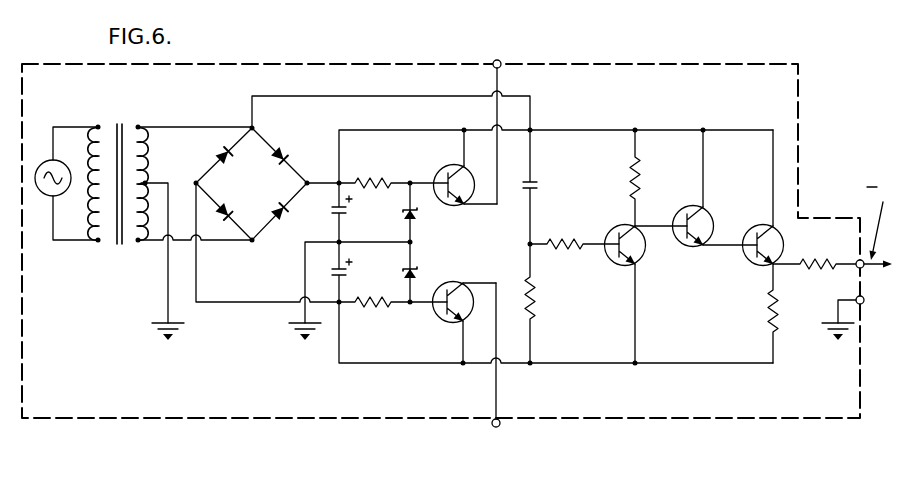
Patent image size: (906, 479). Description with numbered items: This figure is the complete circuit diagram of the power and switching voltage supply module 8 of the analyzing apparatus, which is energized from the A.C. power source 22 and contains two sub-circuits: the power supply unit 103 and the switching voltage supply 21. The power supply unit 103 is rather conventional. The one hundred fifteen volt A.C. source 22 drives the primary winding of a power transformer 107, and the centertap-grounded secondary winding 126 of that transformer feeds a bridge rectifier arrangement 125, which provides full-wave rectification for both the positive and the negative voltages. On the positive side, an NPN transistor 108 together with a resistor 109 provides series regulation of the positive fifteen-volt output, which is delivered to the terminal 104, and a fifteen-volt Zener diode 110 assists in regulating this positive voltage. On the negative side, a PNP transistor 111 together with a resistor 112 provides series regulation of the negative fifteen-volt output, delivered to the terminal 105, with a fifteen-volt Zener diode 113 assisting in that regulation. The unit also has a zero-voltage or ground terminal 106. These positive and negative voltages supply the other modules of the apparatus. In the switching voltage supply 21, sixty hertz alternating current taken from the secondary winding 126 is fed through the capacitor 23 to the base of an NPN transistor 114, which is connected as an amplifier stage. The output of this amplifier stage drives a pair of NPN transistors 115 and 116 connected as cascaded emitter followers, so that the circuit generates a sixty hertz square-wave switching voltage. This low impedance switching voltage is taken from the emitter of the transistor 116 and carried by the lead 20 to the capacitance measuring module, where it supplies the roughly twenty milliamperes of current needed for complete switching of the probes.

The power and switching voltage supply module 8 is at (367, 62).
The A.C. power source 22 is at (50, 199).
The power transformer 107 is at (118, 121).
The secondary winding 126 is at (147, 148).
The bridge rectifier arrangement 125 is at (266, 192).
The resistor 109 is at (369, 178).
The NPN transistor 108 is at (452, 165).
The terminal 104 is at (501, 67).
The Zener diode 110 is at (404, 214).
The power supply unit 103 is at (487, 242).
The capacitor 23 is at (539, 185).
The Zener diode 113 is at (404, 274).
The resistor 112 is at (368, 308).
The PNP transistor 111 is at (450, 324).
The terminal 105 is at (494, 418).
The NPN transistor 114 is at (608, 263).
The NPN transistor 115 is at (695, 205).
The NPN transistor 116 is at (758, 224).
The switching voltage supply 21 is at (692, 280).
The ground terminal 106 is at (856, 298).
The lead 20 is at (863, 270).